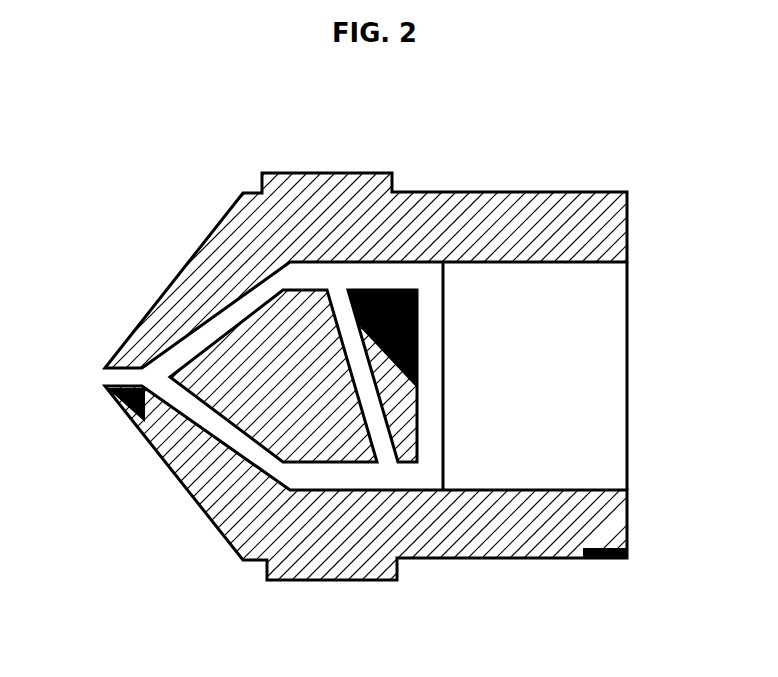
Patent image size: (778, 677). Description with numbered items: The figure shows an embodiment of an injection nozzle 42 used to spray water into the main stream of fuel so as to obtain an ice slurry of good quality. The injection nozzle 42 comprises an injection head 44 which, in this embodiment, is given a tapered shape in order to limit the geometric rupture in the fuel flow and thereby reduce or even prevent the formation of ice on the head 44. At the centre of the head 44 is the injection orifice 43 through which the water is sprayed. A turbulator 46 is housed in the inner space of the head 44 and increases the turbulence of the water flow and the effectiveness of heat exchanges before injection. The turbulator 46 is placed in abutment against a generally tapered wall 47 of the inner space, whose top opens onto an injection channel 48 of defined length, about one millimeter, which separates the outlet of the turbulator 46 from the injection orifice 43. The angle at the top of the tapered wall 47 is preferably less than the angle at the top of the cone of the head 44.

The injection nozzle 42 is at (470, 102).
The injection orifice 43 is at (106, 378).
The injection head 44 is at (206, 240).
The turbulator 46 is at (312, 418).
The wall 47 is at (213, 317).
The injection channel 48 is at (118, 386).